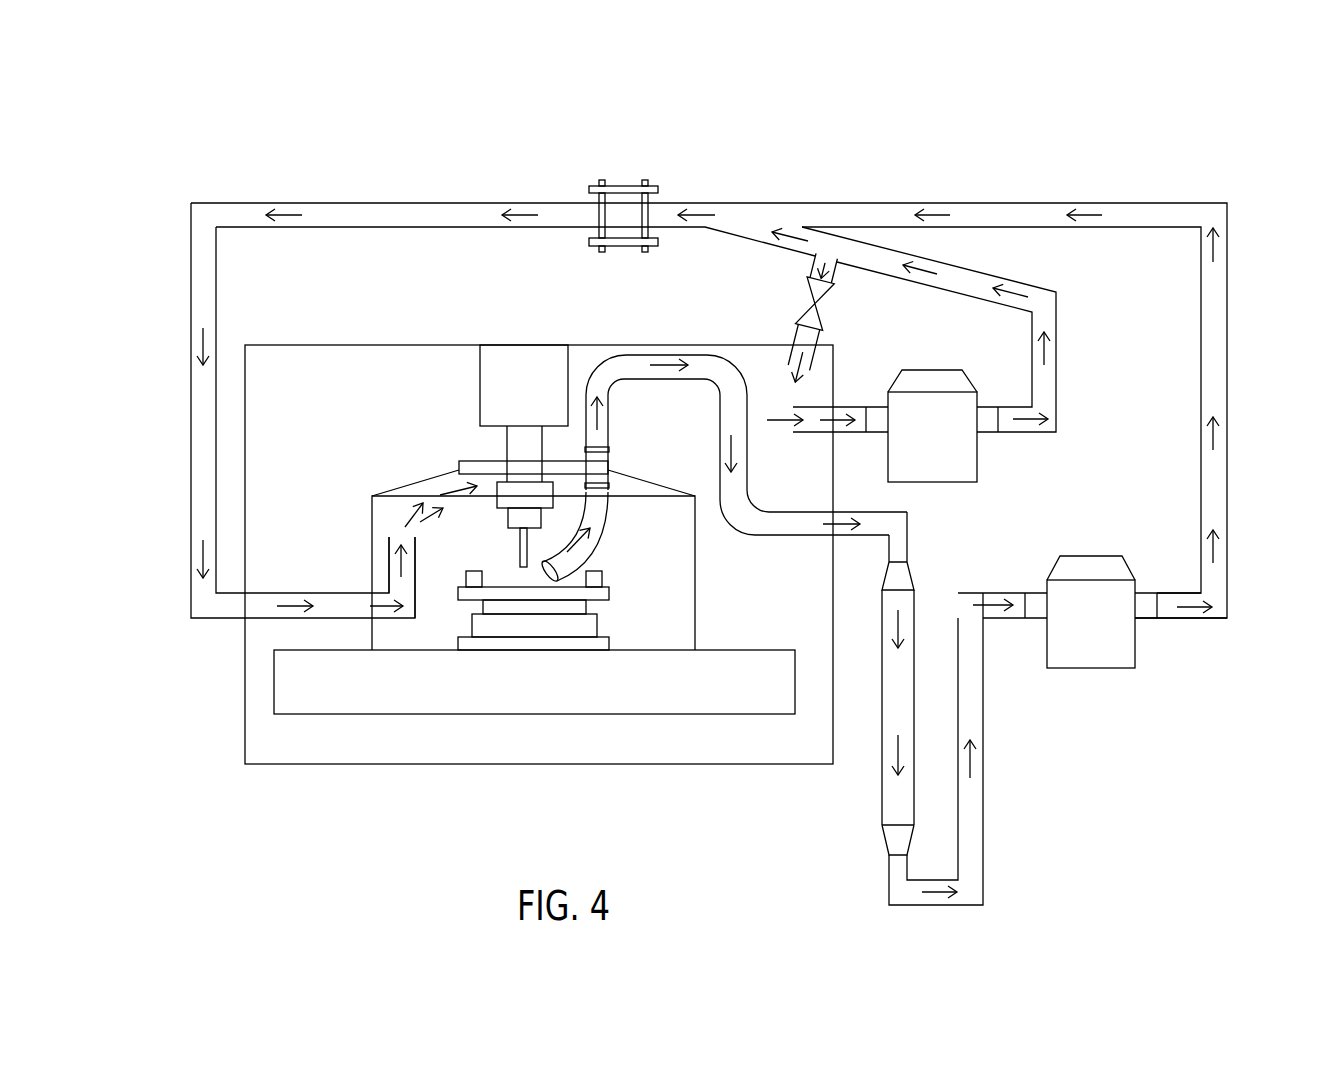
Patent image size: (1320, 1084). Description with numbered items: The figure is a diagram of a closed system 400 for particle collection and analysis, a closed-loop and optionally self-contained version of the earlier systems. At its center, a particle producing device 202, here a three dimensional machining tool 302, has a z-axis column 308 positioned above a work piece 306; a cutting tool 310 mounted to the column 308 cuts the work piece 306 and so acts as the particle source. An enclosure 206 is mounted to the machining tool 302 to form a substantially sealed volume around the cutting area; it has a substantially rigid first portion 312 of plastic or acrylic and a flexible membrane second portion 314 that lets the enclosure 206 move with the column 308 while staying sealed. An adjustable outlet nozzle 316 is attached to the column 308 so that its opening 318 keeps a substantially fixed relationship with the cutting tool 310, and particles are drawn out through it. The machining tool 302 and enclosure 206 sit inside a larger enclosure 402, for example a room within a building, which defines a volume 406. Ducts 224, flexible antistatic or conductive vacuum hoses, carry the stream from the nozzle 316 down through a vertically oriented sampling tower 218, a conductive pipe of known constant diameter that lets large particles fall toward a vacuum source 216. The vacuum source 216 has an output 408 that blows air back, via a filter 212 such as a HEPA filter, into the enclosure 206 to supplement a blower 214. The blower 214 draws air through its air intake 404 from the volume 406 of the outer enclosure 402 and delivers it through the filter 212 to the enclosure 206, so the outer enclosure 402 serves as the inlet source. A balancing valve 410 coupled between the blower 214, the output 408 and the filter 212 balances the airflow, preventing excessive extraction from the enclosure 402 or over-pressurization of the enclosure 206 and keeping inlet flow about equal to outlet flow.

The closed system 400 is at (170, 124).
The filter 212 is at (630, 185).
The ducts 224 is at (191, 481).
The balancing valve 410 is at (825, 318).
The volume 406 is at (763, 376).
The air intake 404 is at (806, 439).
The blower 214 is at (977, 447).
The vacuum source 216 is at (1135, 635).
The output 408 is at (1150, 593).
The sampling tower 218 is at (882, 788).
The enclosure 402 is at (245, 708).
The particle producing device 202 is at (534, 571).
The machining tool 302 is at (534, 571).
The z-axis column 308 is at (480, 396).
The second portion 314 is at (415, 481).
The first portion 312 is at (696, 615).
The enclosure 206 is at (370, 535).
The cutting tool 310 is at (520, 541).
The outlet nozzle 316 is at (608, 517).
The opening 318 is at (540, 574).
The work piece 306 is at (586, 607).